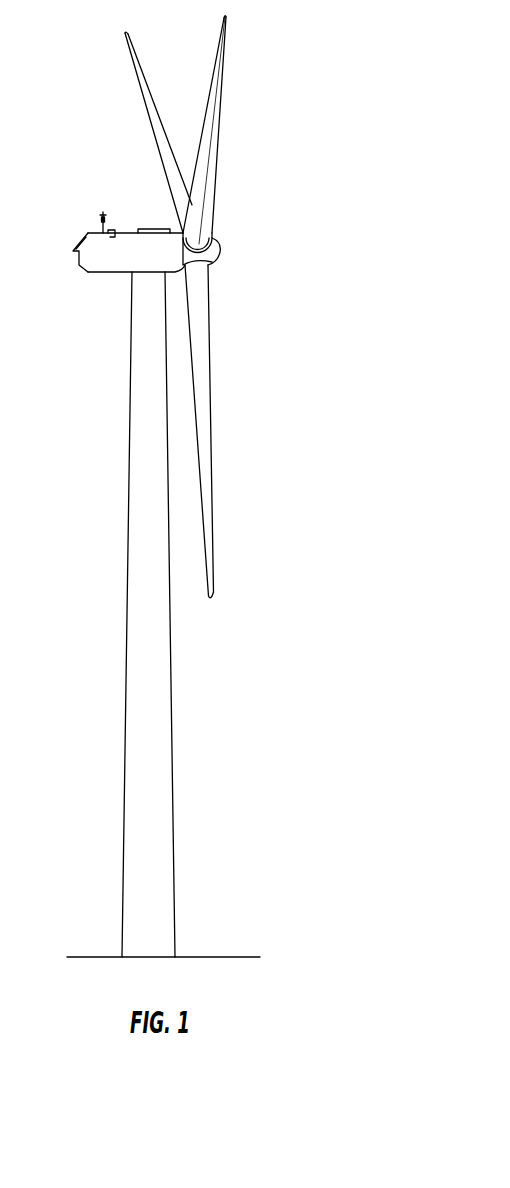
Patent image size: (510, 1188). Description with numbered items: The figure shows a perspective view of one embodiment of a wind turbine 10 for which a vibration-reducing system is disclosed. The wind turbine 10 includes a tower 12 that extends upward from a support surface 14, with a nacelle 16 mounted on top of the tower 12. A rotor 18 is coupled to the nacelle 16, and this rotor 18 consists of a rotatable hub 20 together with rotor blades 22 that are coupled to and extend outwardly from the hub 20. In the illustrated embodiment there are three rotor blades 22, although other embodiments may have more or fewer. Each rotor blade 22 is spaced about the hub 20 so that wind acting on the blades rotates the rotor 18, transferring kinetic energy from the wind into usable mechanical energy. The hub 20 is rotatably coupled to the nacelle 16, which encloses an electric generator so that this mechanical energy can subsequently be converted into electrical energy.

The wind turbine 10 is at (322, 163).
The tower 12 is at (152, 720).
The support surface 14 is at (98, 957).
The nacelle 16 is at (107, 268).
The rotor 18 is at (225, 240).
The rotatable hub 20 is at (215, 252).
The rotor blade 22 is at (145, 83).